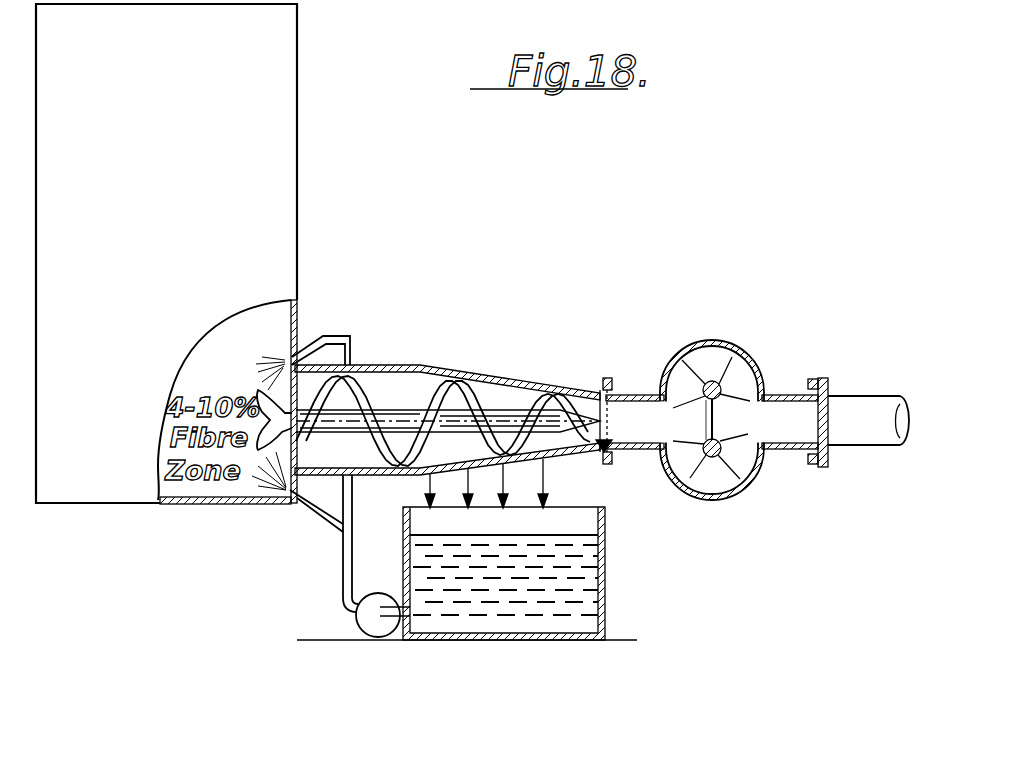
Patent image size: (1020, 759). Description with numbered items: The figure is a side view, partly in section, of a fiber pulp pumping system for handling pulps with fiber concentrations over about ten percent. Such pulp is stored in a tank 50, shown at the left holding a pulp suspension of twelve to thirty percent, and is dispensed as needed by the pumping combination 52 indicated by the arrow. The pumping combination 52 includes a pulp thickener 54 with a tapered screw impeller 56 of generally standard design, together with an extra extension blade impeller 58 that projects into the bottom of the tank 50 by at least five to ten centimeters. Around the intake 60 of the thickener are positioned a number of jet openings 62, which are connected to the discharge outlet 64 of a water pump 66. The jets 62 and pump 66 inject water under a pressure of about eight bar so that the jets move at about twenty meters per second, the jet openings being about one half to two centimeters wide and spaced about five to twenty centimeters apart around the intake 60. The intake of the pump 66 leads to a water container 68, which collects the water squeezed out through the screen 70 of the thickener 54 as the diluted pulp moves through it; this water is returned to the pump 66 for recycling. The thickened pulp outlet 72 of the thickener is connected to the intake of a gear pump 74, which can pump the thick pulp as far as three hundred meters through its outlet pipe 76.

The tank 50 is at (300, 186).
The pumping combination 52 is at (508, 304).
The pulp thickener 54 is at (368, 372).
The tapered screw impeller 56 is at (410, 413).
The extension blade impeller 58 is at (260, 395).
The intake 60 is at (283, 460).
The jet openings 62 is at (302, 498).
The discharge outlet 64 is at (342, 584).
The water pump 66 is at (372, 627).
The water container 68 is at (604, 578).
The screen 70 is at (530, 382).
The thickened pulp outlet 72 is at (637, 410).
The gear pump 74 is at (734, 375).
The outlet pipe 76 is at (858, 412).